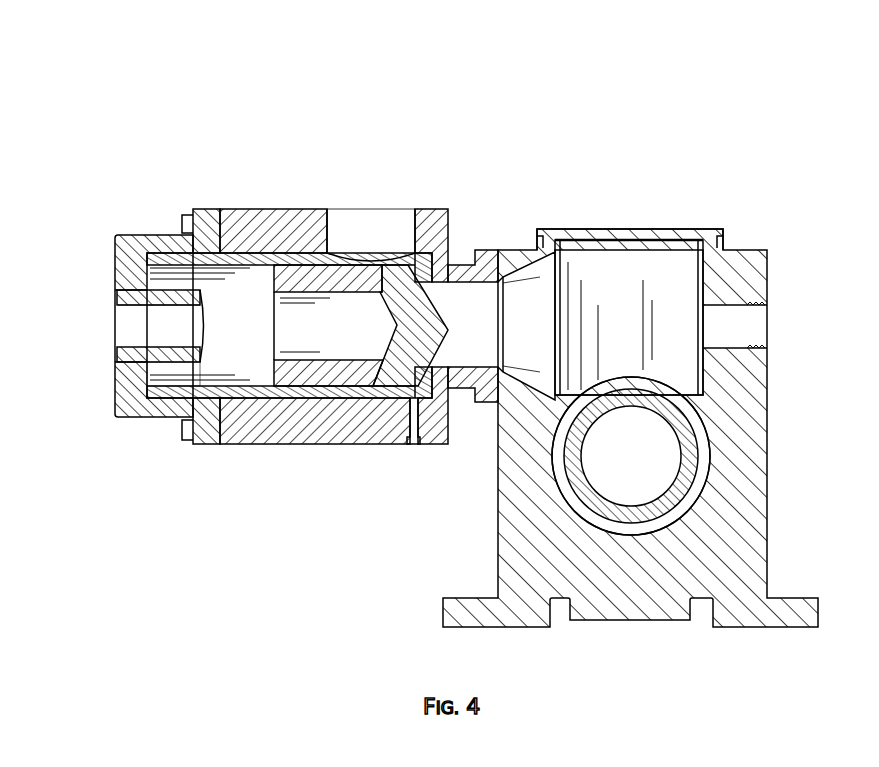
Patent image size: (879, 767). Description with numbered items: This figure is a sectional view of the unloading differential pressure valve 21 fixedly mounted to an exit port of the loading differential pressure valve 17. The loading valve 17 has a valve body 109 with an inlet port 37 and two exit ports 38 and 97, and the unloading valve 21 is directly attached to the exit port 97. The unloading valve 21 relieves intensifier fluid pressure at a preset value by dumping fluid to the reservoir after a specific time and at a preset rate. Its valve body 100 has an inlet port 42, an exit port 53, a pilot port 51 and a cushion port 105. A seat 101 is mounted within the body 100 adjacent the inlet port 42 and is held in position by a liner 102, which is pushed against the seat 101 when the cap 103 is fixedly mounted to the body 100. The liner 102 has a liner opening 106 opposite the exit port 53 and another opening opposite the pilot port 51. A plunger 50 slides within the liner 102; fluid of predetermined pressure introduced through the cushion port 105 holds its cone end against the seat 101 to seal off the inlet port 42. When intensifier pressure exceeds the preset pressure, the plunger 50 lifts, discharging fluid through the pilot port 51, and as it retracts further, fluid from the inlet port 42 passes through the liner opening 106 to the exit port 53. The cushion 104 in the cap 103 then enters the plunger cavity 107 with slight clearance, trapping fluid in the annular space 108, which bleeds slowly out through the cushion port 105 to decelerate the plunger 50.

The loading differential pressure valve 17 is at (599, 157).
The unloading differential pressure valve 21 is at (258, 112).
The inlet port 37 is at (644, 450).
The exit port 38 is at (634, 215).
The inlet port 42 is at (460, 337).
The plunger 50 is at (372, 365).
The pilot port 51 is at (414, 460).
The exit port 53 is at (373, 193).
The exit port 97 is at (527, 318).
The valve body 100 is at (240, 427).
The seat 101 is at (423, 262).
The liner 102 is at (240, 257).
The cap 103 is at (130, 263).
The cushion 104 is at (172, 300).
The cushion port 105 is at (102, 323).
The liner opening 106 is at (370, 246).
The plunger cavity 107 is at (318, 332).
The annular space 108 is at (162, 377).
The valve body 109 is at (747, 539).